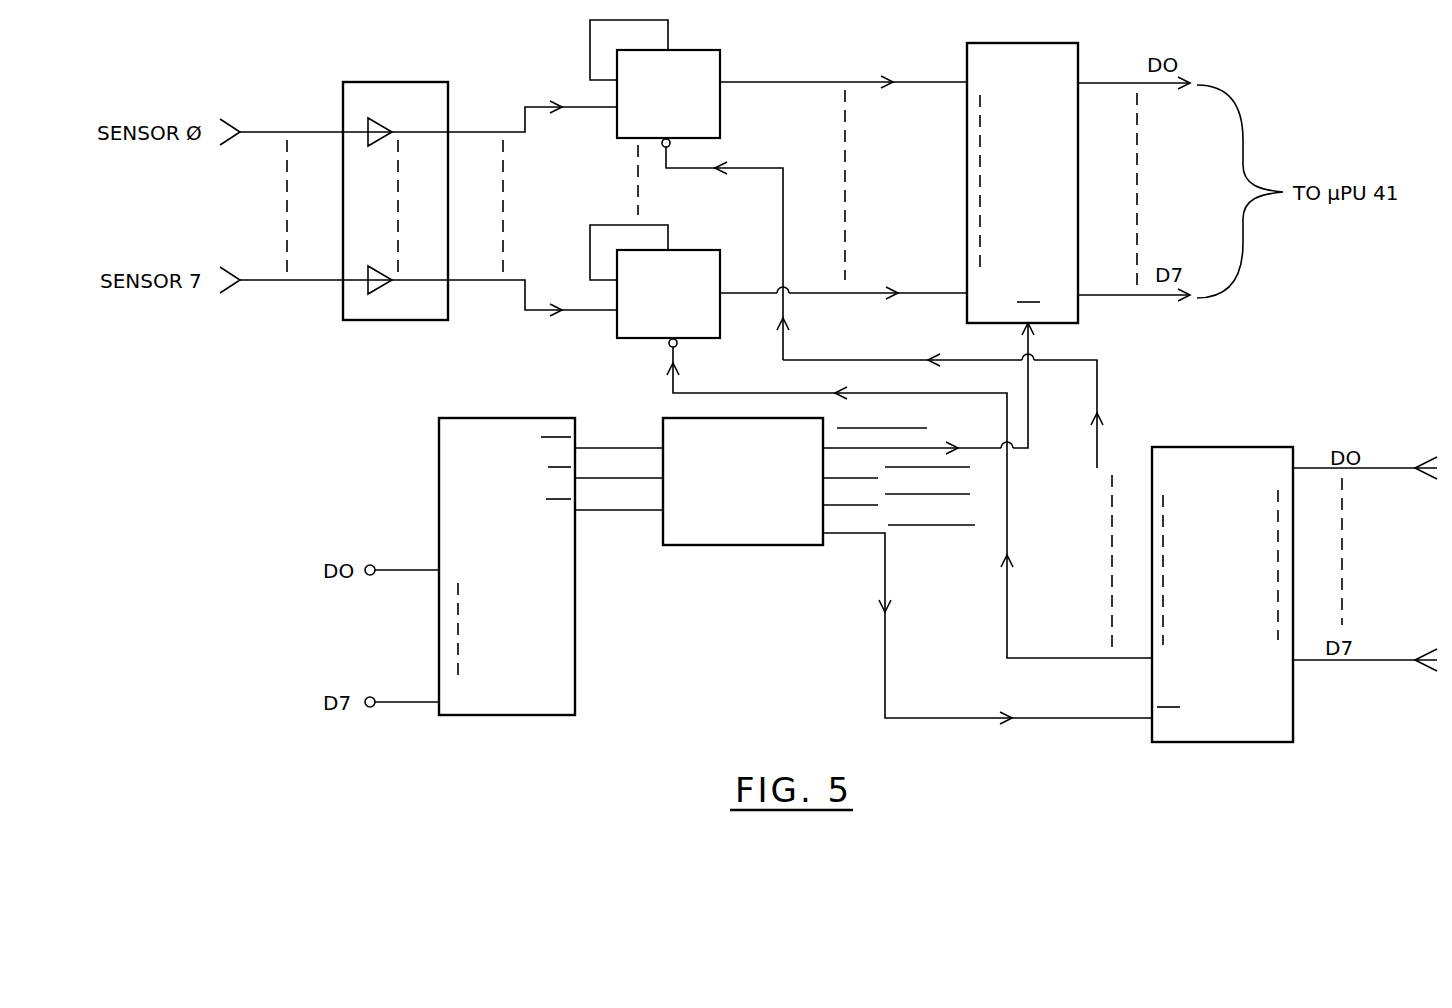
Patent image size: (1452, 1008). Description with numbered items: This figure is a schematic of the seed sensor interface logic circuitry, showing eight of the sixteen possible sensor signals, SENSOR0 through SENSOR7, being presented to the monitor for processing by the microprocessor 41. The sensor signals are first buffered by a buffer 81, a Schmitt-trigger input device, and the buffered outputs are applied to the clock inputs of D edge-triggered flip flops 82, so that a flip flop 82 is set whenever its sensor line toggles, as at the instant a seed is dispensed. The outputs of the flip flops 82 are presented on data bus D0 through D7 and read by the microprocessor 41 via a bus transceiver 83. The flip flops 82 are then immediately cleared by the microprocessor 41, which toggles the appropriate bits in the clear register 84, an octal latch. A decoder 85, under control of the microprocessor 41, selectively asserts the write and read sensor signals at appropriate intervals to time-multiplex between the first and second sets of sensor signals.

The microprocessor 41 is at (452, 457).
The buffer 81 is at (417, 90).
The D edge-triggered flip flop 82 is at (702, 60).
The bus transceiver 83 is at (1045, 48).
The clear register 84 is at (1227, 450).
The decoder 85 is at (728, 537).